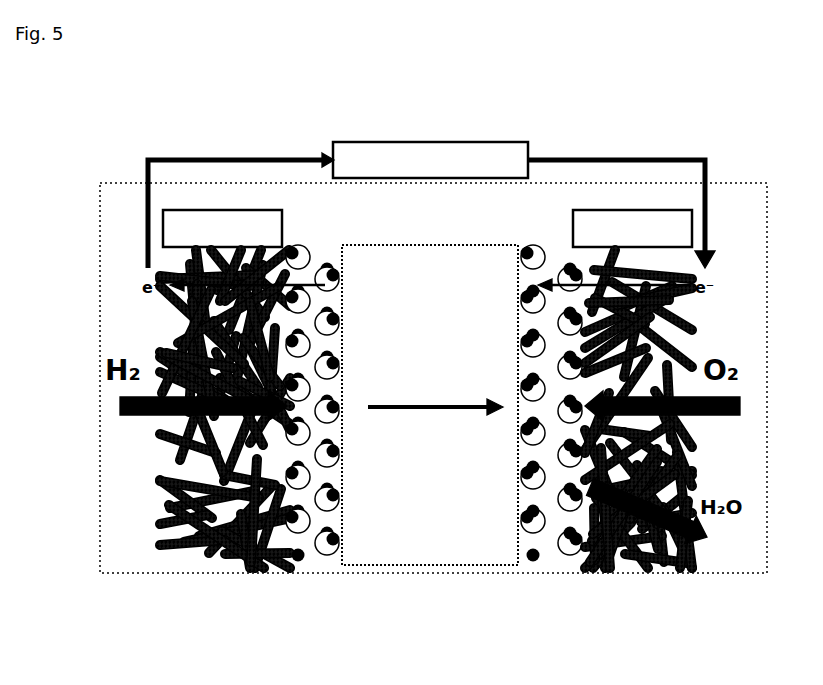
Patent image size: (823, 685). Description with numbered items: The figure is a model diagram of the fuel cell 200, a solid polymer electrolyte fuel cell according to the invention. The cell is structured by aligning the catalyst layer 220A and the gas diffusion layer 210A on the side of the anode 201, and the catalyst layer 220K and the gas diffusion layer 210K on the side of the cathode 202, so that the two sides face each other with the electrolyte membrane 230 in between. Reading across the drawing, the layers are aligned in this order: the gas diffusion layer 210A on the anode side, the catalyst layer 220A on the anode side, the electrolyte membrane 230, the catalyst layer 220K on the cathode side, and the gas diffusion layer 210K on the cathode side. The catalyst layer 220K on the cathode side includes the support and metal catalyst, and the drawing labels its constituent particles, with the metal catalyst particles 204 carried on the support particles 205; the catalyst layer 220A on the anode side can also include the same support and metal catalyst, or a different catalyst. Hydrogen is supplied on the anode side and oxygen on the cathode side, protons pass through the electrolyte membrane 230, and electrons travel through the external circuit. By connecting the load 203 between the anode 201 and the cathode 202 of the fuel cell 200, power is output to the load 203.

The fuel cell 200 is at (433, 378).
The anode 201 is at (162, 208).
The cathode 202 is at (683, 207).
The load 203 is at (433, 140).
The catalyst particles 204 is at (516, 440).
The carbon support particles 205 is at (520, 489).
The gas diffusion layer on the anode side 210A is at (252, 577).
The catalyst layer on the anode side 220A is at (342, 577).
The electrolyte membrane 230 is at (520, 577).
The catalyst layer on the cathode side 220K is at (506, 441).
The gas diffusion layer on the cathode side 210K is at (715, 577).